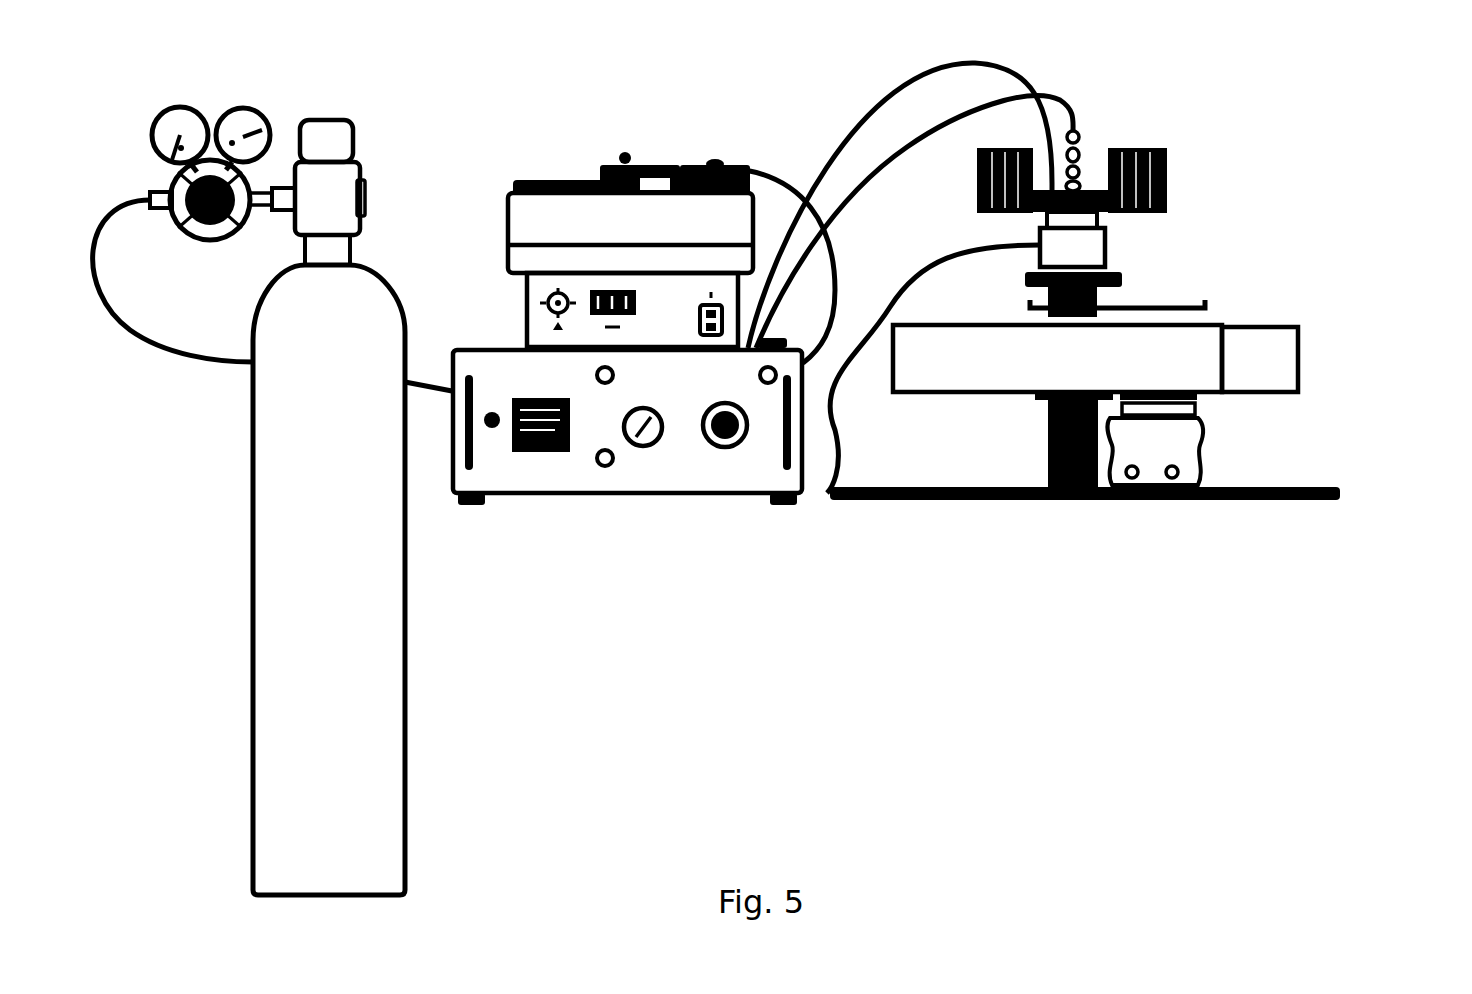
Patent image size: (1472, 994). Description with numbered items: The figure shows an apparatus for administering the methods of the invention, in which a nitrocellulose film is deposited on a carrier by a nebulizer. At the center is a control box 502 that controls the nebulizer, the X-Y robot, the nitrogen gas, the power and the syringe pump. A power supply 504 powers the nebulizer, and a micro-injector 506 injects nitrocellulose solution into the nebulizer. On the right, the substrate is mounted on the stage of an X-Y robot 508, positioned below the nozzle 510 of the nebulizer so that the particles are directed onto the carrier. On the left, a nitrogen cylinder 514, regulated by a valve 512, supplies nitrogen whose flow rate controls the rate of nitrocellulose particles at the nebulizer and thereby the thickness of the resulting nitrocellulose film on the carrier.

The control box 502 is at (620, 493).
The power supply 504 is at (596, 214).
The micro-injector 506 is at (550, 185).
The X-Y robot 508 is at (1298, 360).
The nozzle 510 is at (1105, 245).
The valve 512 is at (322, 118).
The nitrogen cylinder 514 is at (253, 607).